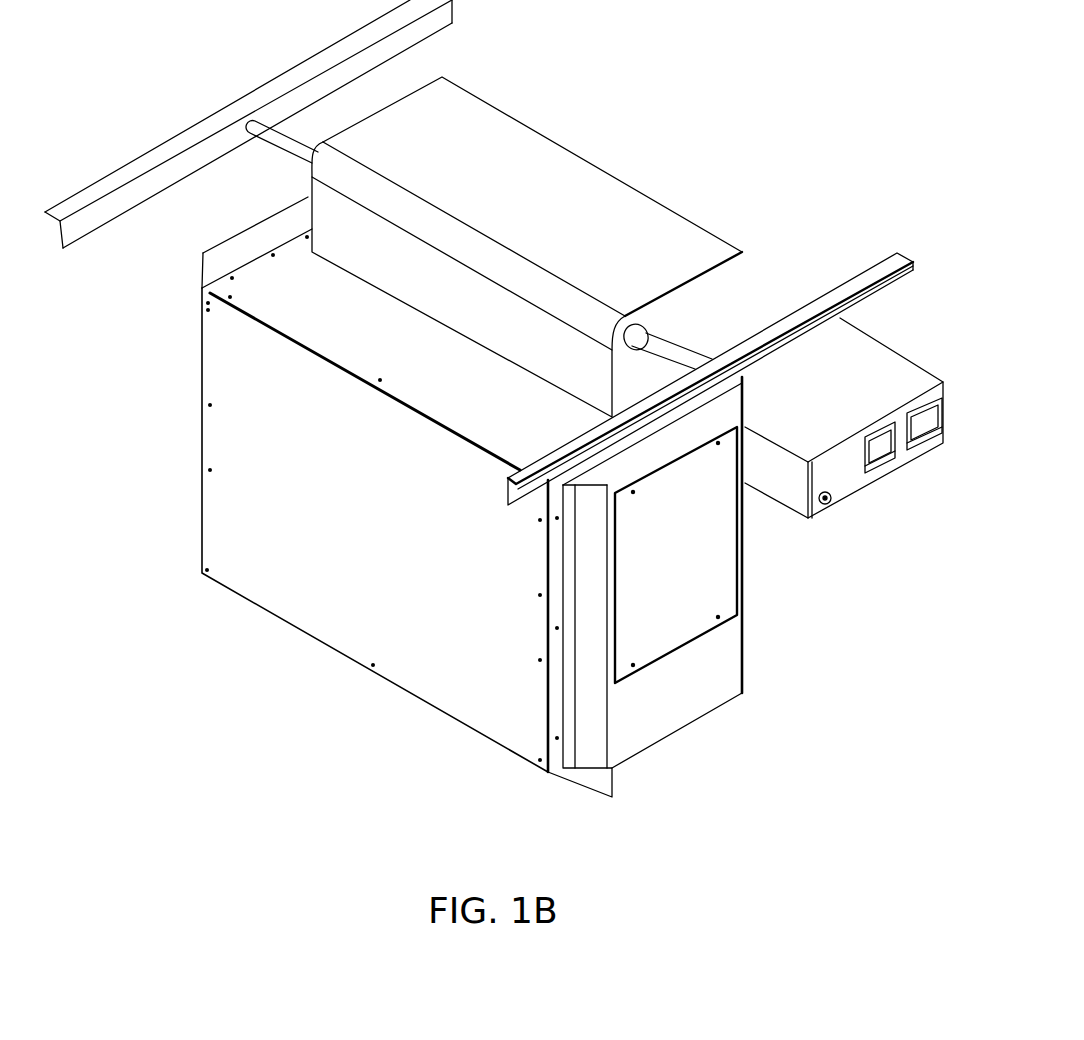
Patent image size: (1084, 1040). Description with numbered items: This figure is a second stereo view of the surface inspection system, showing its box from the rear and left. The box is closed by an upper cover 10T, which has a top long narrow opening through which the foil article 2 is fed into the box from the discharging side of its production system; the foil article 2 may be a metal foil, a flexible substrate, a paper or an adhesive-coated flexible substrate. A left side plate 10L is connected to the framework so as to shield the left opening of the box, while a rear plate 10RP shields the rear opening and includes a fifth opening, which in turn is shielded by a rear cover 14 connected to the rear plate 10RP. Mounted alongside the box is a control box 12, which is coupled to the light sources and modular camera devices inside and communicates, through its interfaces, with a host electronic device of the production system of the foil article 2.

The foil article 2 is at (577, 183).
The upper cover 10T is at (250, 285).
The left side plate 10L is at (313, 621).
The rear plate 10RP is at (733, 677).
The rear cover 14 is at (724, 573).
The control box 12 is at (885, 340).